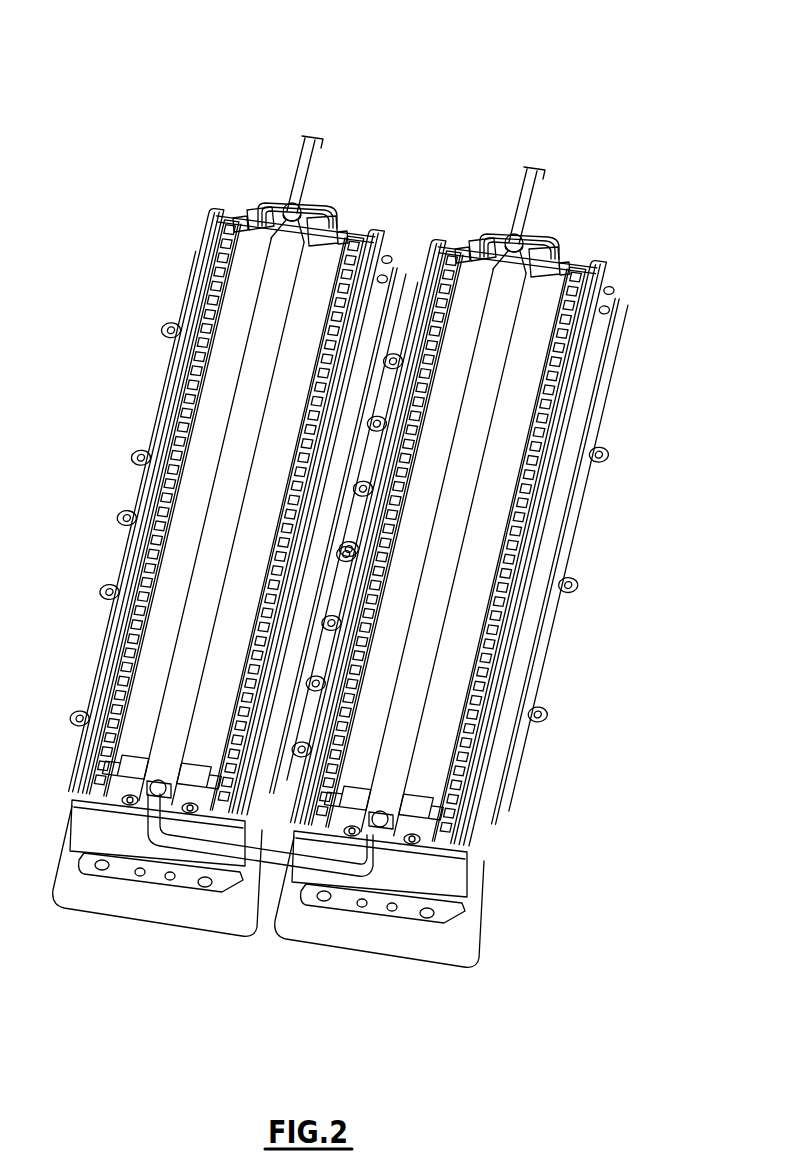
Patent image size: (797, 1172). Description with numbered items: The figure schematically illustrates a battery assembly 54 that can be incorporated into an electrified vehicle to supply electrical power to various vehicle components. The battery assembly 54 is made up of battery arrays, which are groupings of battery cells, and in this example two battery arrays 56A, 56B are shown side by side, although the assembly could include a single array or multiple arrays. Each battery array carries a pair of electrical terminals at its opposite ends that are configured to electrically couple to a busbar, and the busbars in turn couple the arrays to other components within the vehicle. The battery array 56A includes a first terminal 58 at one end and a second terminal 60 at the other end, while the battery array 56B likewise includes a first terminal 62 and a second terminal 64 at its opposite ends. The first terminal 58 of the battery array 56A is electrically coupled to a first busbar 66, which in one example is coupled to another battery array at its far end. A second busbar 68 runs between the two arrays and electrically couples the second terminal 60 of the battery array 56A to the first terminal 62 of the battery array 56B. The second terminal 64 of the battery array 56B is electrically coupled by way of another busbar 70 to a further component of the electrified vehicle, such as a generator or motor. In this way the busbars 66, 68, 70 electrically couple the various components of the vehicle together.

The battery assembly 54 is at (357, 492).
The battery array 56A is at (242, 532).
The battery array 56B is at (468, 563).
The first terminal 58 is at (288, 204).
The second terminal 60 is at (122, 822).
The first terminal 62 is at (396, 845).
The second terminal 64 is at (511, 235).
The first busbar 66 is at (302, 168).
The second busbar 68 is at (283, 862).
The busbar 70 is at (525, 198).